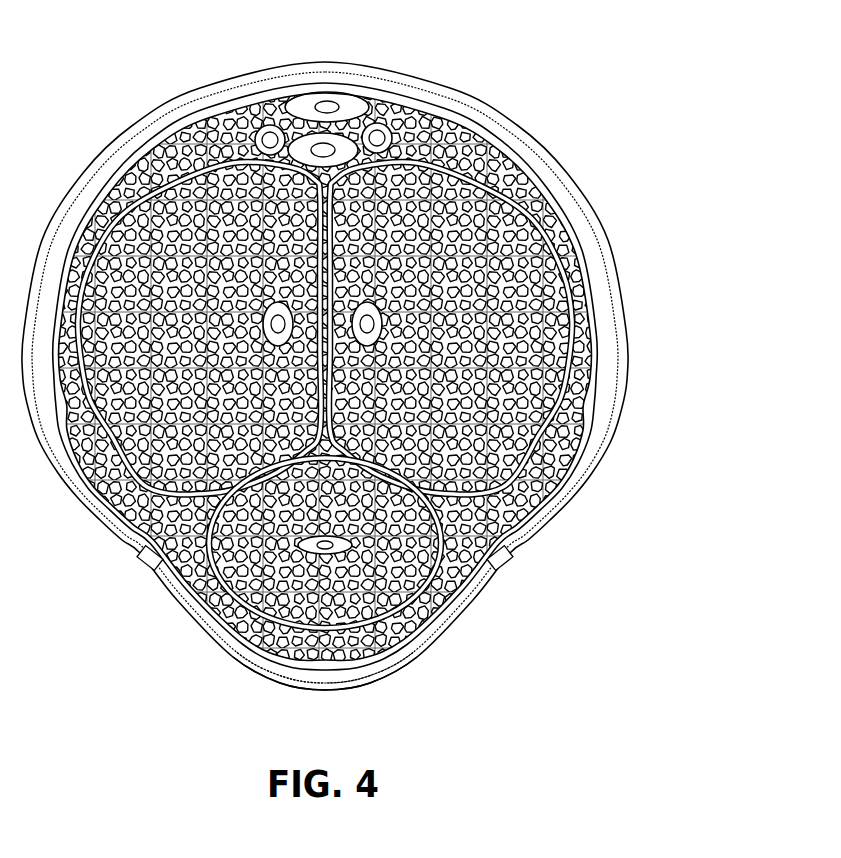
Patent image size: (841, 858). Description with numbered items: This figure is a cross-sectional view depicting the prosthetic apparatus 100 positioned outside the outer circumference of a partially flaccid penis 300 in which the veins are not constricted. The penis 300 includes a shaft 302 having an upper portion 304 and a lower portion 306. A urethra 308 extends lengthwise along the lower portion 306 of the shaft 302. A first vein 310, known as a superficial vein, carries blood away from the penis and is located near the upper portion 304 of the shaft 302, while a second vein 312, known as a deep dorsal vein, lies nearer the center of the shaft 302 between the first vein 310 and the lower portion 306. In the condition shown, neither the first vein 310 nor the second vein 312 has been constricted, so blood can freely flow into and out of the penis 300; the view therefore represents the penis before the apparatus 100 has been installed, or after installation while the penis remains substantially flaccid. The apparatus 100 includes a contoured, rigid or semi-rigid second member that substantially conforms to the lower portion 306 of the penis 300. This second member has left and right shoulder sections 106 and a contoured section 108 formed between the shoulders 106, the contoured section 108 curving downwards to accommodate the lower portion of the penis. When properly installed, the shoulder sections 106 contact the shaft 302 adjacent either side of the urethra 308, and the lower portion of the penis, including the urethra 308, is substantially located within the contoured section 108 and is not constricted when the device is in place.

The apparatus 100 is at (605, 204).
The shoulder sections 106 is at (158, 577).
The contoured section 108 is at (324, 690).
The penis 300 is at (592, 266).
The shaft 302 is at (478, 296).
The upper portion 304 is at (370, 84).
The lower portion 306 is at (345, 648).
The urethra 308 is at (318, 547).
The first vein 310 is at (325, 105).
The second vein 312 is at (340, 150).